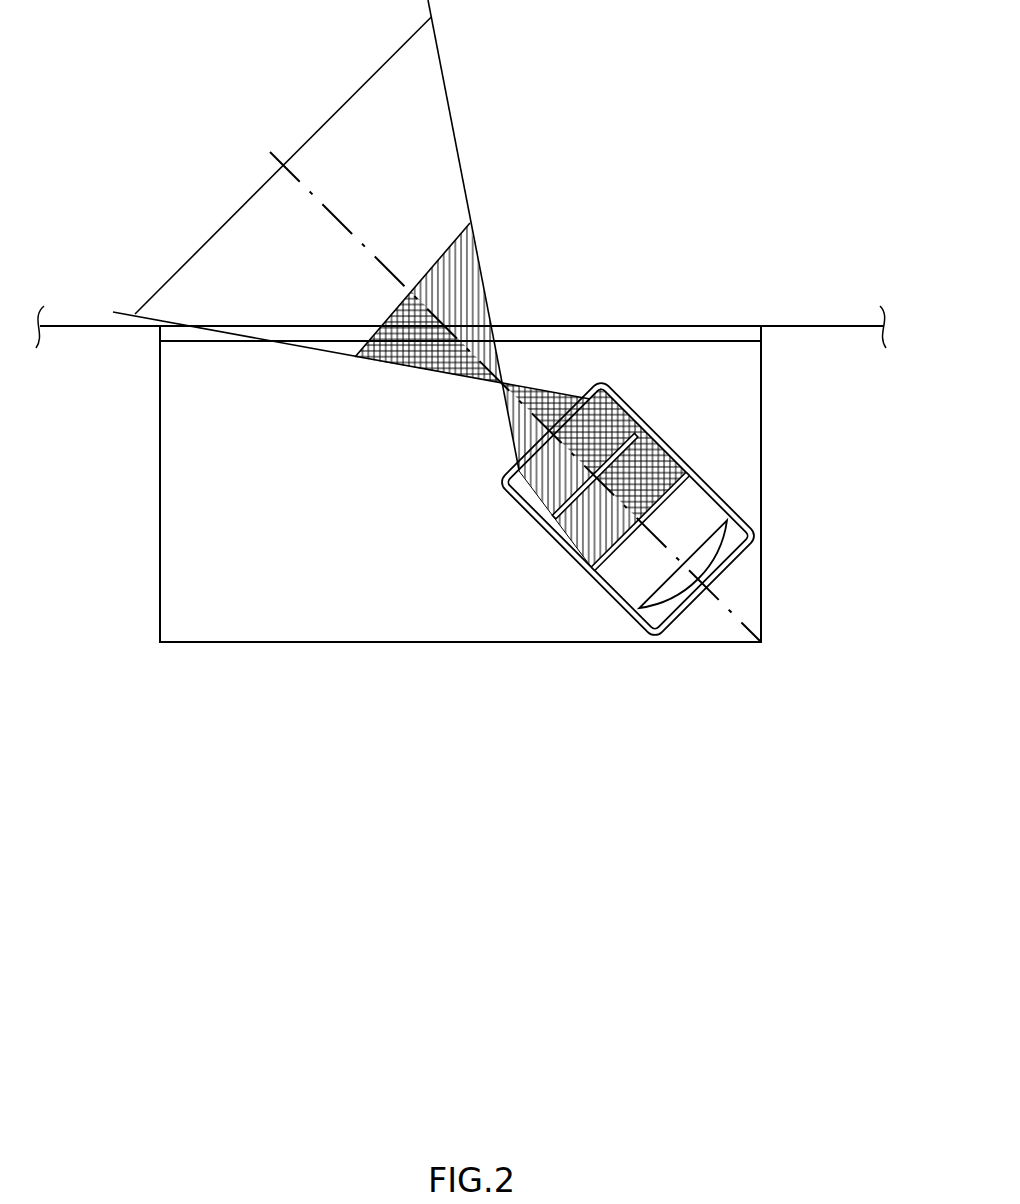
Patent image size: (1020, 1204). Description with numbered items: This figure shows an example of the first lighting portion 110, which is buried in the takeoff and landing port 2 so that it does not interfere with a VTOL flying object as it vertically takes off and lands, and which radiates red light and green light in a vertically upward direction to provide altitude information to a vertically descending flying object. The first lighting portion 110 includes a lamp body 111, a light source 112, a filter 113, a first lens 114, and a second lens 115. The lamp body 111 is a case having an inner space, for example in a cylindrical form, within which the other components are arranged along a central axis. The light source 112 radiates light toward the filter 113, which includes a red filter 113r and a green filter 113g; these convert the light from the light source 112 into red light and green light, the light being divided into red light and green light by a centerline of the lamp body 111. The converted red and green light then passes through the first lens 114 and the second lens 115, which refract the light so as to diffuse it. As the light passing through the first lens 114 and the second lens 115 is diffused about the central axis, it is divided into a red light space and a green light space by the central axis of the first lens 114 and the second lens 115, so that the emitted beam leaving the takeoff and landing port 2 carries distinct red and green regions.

The takeoff and landing port 2 is at (803, 326).
The first lighting portion 110 is at (498, 386).
The lamp body 111 is at (646, 413).
The light source 112 is at (665, 607).
The filter 113 is at (661, 548).
The green filter 113g is at (655, 513).
The red filter 113r is at (592, 566).
The first lens 114 is at (570, 503).
The second lens 115 is at (522, 445).